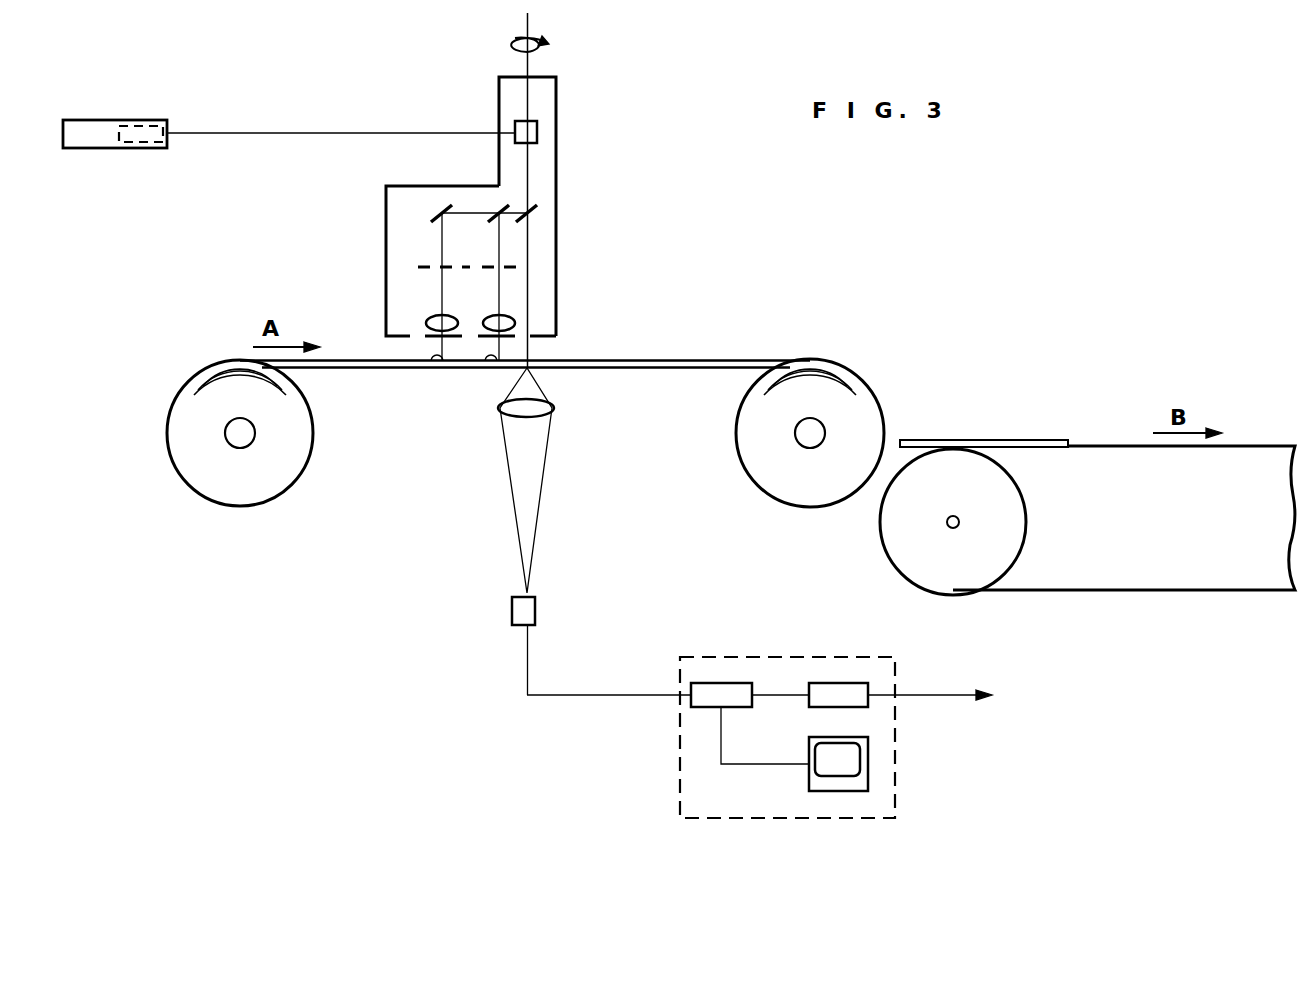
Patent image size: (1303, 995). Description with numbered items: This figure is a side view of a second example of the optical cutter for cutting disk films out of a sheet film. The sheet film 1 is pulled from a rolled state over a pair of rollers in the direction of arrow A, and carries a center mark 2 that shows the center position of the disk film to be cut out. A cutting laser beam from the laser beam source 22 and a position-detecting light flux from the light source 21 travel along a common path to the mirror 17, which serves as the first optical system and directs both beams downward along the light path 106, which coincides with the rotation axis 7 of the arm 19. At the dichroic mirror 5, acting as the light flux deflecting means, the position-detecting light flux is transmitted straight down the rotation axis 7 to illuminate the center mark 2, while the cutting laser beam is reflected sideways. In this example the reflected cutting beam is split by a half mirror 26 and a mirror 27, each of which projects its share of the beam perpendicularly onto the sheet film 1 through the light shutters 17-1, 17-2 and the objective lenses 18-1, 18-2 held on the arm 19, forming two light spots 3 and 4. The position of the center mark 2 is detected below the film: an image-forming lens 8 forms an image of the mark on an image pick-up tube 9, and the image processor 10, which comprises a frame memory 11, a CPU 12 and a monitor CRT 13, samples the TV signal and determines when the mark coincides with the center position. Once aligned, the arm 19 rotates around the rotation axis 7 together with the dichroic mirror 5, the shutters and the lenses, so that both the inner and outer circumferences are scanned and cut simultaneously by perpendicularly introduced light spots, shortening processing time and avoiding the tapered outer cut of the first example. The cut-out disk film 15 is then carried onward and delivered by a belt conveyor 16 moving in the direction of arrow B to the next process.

The sheet film 1 is at (272, 483).
The center mark 2 is at (530, 356).
The light spot 3 is at (482, 367).
The light spot 4 is at (425, 367).
The dichroic mirror 5 is at (535, 212).
The rotation axis 7 is at (528, 25).
The image-forming lens 8 is at (556, 410).
The image pick-up tube 9 is at (535, 615).
The image processor 10 is at (680, 790).
The frame memory 11 is at (710, 684).
The CPU 12 is at (833, 684).
The monitor CRT 13 is at (868, 788).
The disk film 15 is at (948, 440).
The belt conveyor 16 is at (1258, 452).
The mirror 17 is at (537, 134).
The light shutter 17-1 is at (386, 260).
The light shutter 17-2 is at (514, 253).
The objective lens 18-1 is at (410, 320).
The objective lens 18-2 is at (512, 318).
The arm 19 is at (386, 202).
The light source 21 is at (148, 130).
The laser beam source 22 is at (85, 140).
The half mirror 26 is at (515, 197).
The mirror 27 is at (440, 205).
The light path 106 is at (530, 162).